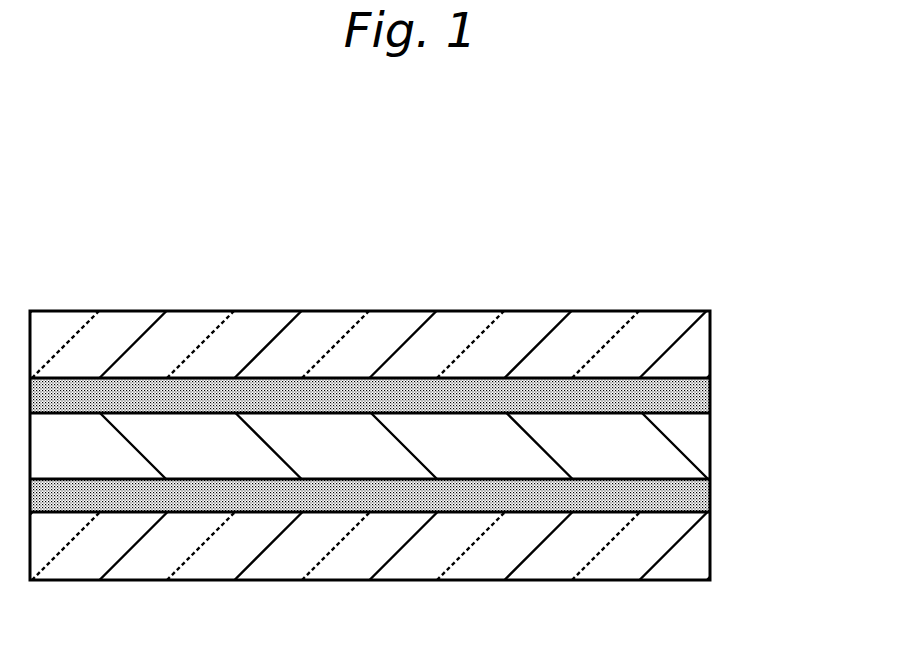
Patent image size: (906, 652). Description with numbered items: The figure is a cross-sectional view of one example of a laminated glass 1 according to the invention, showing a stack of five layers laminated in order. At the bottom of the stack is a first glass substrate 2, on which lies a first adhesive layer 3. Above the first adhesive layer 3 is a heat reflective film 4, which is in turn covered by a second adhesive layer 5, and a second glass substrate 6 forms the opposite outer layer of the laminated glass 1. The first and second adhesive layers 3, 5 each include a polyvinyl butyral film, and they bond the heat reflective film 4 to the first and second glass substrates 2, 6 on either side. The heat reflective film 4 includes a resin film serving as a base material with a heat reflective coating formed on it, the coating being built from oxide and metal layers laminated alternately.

The laminated glass 1 is at (497, 260).
The first glass substrate 2 is at (693, 547).
The first adhesive layer 3 is at (693, 497).
The heat reflective film 4 is at (693, 447).
The second adhesive layer 5 is at (693, 397).
The second glass substrate 6 is at (693, 347).